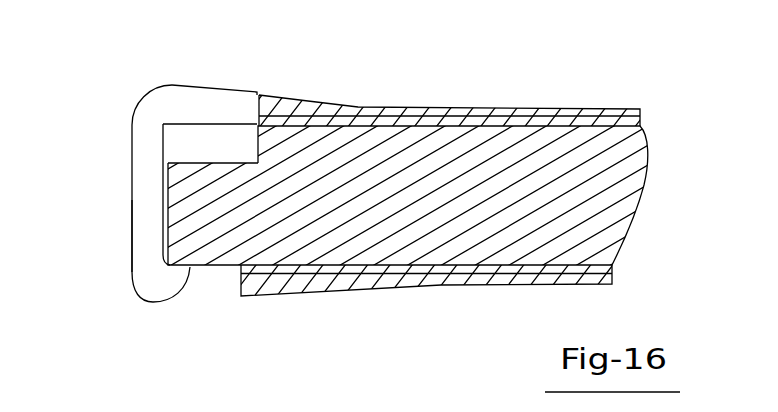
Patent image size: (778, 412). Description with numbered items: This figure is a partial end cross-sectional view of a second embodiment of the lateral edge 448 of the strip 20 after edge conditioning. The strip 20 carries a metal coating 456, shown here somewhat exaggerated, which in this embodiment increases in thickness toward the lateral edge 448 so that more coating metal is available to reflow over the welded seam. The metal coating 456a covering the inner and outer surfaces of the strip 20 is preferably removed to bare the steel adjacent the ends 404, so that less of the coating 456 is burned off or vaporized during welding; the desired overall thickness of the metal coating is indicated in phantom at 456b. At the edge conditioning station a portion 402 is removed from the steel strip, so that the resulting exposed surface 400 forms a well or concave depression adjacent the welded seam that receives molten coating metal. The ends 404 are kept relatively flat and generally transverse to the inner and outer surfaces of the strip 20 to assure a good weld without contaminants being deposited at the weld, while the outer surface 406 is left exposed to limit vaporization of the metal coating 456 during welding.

The strip 20 is at (537, 170).
The exposed surface 400 is at (228, 162).
The removed portion 402 is at (197, 140).
The ends 404 is at (111, 194).
The outer surface 406 is at (233, 299).
The lateral edge 448 is at (115, 123).
The metal coating 456 is at (435, 282).
The metal coating covering inner and outer surfaces 456a is at (142, 208).
The desired overall coating thickness 456b is at (310, 275).